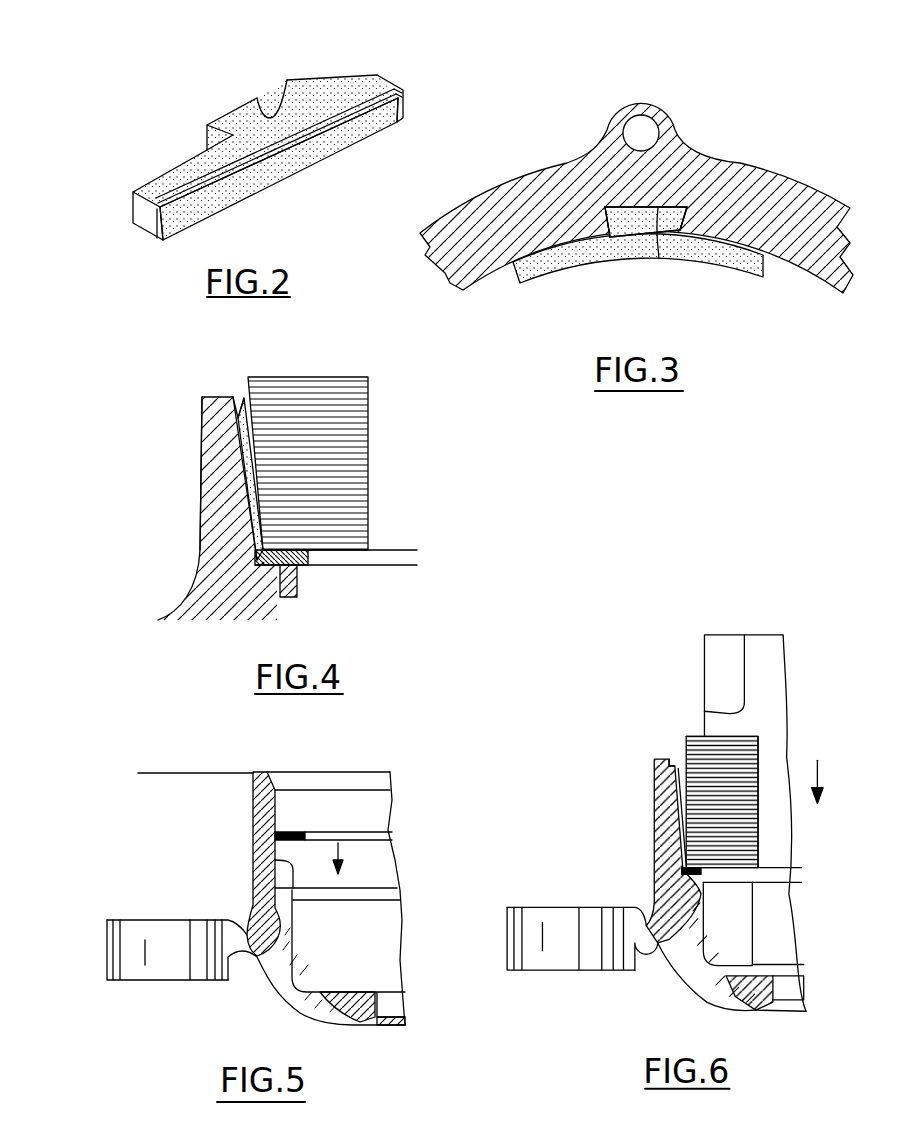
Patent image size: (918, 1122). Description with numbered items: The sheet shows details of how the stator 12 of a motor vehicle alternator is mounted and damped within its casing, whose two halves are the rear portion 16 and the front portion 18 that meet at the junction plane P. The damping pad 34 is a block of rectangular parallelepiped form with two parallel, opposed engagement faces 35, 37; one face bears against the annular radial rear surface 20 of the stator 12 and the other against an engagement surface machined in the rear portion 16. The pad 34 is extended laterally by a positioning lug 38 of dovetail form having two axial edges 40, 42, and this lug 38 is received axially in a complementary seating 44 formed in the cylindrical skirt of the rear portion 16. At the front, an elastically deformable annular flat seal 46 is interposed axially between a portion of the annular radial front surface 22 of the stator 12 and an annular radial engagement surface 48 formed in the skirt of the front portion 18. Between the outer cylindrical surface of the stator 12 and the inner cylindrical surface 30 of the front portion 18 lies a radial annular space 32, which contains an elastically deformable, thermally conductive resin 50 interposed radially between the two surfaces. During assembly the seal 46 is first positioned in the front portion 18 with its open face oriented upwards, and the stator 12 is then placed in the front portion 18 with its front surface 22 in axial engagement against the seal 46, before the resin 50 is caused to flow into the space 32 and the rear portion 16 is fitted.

In FIG. 4, the stator 12 is at (356, 479).
In FIG. 6, the stator 12 is at (756, 732).
In FIG. 3, the rear portion 16 is at (530, 178).
In FIG. 4, the front portion 18 is at (198, 560).
In FIG. 5, the front portion 18 is at (249, 827).
In FIG. 6, the front portion 18 is at (633, 853).
In FIG. 6, the rear surface 20 is at (672, 720).
In FIG. 4, the front surface 22 is at (350, 555).
In FIG. 6, the front surface 22 is at (773, 923).
In FIG. 4, the inner cylindrical surface 30 is at (247, 480).
In FIG. 4, the radial annular space 32 is at (242, 400).
In FIG. 6, the radial annular space 32 is at (655, 767).
In FIG. 2, the pad 34 is at (312, 173).
In FIG. 3, the pad 34 is at (548, 285).
In FIG. 2, the engagement face 35 is at (365, 92).
In FIG. 2, the engagement face 37 is at (370, 137).
In FIG. 2, the positioning lug 38 is at (240, 120).
In FIG. 3, the positioning lug 38 is at (625, 230).
In FIG. 2, the axial edge 40 is at (203, 128).
In FIG. 3, the axial edge 40 is at (602, 205).
In FIG. 2, the axial edge 42 is at (271, 107).
In FIG. 3, the axial edge 42 is at (697, 207).
In FIG. 3, the complementary seating 44 is at (659, 256).
In FIG. 4, the annular flat seal 46 is at (385, 548).
In FIG. 5, the annular flat seal 46 is at (368, 827).
In FIG. 6, the annular flat seal 46 is at (658, 839).
In FIG. 4, the annular radial engagement surface 48 is at (290, 598).
In FIG. 5, the annular radial engagement surface 48 is at (275, 860).
In FIG. 4, the resin 50 is at (203, 445).
In FIG. 5, the junction plane P is at (195, 772).